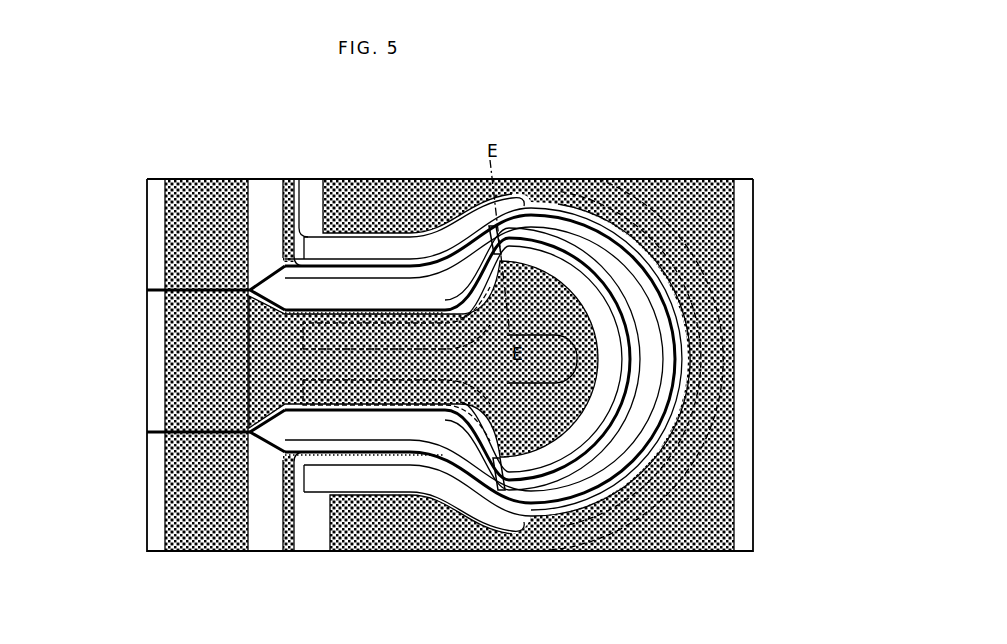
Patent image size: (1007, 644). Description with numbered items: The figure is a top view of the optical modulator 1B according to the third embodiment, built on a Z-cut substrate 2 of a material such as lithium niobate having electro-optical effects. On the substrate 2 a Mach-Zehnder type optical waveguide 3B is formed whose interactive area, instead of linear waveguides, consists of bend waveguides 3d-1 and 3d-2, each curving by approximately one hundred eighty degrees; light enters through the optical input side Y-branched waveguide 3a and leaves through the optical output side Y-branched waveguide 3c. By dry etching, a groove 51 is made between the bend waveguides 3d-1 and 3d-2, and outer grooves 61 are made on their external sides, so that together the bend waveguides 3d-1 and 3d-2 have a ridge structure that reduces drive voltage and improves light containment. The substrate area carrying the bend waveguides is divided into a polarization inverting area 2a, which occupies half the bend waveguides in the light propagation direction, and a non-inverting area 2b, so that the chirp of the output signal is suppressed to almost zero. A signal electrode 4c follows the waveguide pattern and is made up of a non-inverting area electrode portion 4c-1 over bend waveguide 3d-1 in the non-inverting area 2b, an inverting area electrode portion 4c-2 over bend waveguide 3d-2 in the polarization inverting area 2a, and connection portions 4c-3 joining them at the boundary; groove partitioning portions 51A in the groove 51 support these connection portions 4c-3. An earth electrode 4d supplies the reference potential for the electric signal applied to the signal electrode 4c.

The optical modulator 1B is at (234, 162).
The substrate 2 is at (630, 553).
The polarization inverting area 2a is at (744, 432).
The non-inverting area 2b is at (712, 182).
The optical input side Y-branched waveguide 3a is at (283, 272).
The Mach-Zehnder type optical waveguide 3B is at (181, 444).
The optical output side Y-branched waveguide 3c is at (283, 425).
The bend waveguide 3d-1 is at (712, 368).
The bend waveguide 3d-2 is at (628, 235).
The signal electrode 4c is at (289, 547).
The non-inverting area electrode portion 4c-1 is at (400, 246).
The inverting area electrode portion 4c-2 is at (655, 330).
The connection portion 4c-3 is at (524, 205).
The earth electrode 4d is at (185, 535).
The groove 51 is at (313, 292).
The groove partitioning portion 51A is at (489, 236).
The outer groove 61 is at (318, 243).